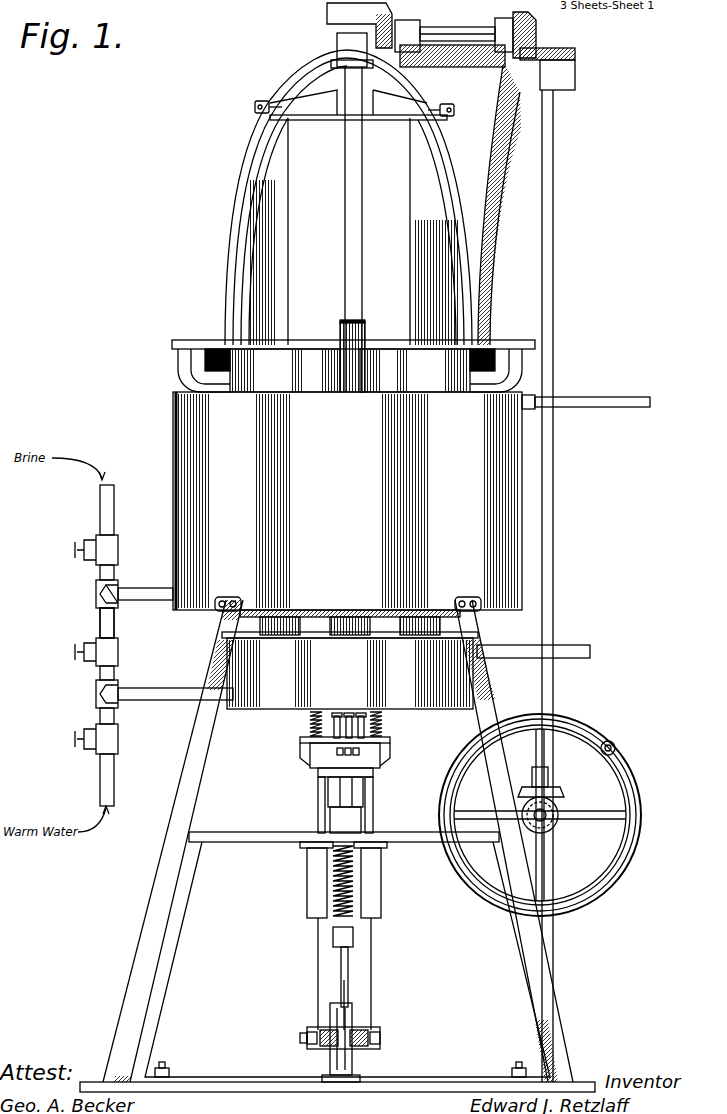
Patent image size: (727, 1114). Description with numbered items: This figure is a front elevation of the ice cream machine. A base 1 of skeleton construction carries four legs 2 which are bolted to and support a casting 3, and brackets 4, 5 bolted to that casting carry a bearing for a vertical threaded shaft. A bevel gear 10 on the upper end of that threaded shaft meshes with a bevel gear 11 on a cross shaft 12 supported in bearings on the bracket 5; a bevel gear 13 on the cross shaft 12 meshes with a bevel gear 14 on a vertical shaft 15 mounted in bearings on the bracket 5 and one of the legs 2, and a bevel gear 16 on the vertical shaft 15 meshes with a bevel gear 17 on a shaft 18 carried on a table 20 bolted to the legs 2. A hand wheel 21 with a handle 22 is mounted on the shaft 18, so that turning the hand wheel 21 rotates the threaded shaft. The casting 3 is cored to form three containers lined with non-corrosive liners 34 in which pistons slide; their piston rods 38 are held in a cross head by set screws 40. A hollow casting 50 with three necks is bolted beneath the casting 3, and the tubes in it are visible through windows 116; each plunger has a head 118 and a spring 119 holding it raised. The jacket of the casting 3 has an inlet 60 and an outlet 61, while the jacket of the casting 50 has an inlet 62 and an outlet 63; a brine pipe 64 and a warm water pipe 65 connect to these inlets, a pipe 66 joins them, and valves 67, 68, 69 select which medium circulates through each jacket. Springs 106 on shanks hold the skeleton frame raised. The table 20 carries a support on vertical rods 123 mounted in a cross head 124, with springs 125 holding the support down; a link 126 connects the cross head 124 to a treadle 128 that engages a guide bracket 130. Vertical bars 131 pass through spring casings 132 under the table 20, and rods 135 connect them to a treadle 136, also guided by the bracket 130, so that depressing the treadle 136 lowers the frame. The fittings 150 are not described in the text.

The base 1 is at (232, 1078).
The legs 2 is at (180, 780).
The casting 3 is at (347, 501).
The bracket 4 is at (245, 240).
The bracket 5 is at (488, 188).
The bevel gear 10 is at (330, 12).
The bevel gear 11 is at (411, 26).
The cross shaft 12 is at (452, 37).
The bevel gear 13 is at (524, 28).
The bevel gear 14 is at (558, 50).
The vertical shaft 15 is at (553, 192).
The bevel gear 16 is at (548, 790).
The bevel gear 17 is at (555, 830).
The shaft 18 is at (556, 808).
The table 20 is at (253, 832).
The hand wheel 21 is at (560, 812).
The handle 22 is at (614, 743).
The liners 34 is at (353, 366).
The piston rods 38 is at (285, 242).
The set screws 40 is at (262, 100).
The hollow casting 50 is at (350, 659).
The inlet 60 is at (142, 588).
The outlet 61 is at (590, 398).
The inlet 62 is at (145, 696).
The outlet 63 is at (505, 645).
The pipe 64 is at (114, 528).
The pipe 65 is at (110, 766).
The pipe 66 is at (115, 637).
The valve 67 is at (78, 560).
The valve 68 is at (75, 652).
The valve 69 is at (75, 740).
The spring 106 is at (382, 724).
The windows 116 is at (350, 758).
The head 118 is at (349, 714).
The spring 119 is at (310, 724).
The vertical rods 123 is at (336, 905).
The cross head 124 is at (340, 940).
The springs 125 is at (334, 925).
The link 126 is at (342, 985).
The treadle 128 is at (367, 1050).
The guide bracket 130 is at (352, 1012).
The vertical bars 131 is at (318, 792).
The spring casings 132 is at (307, 867).
The rod 135 is at (371, 965).
The treadle 136 is at (320, 1050).
The fittings 150 is at (206, 347).